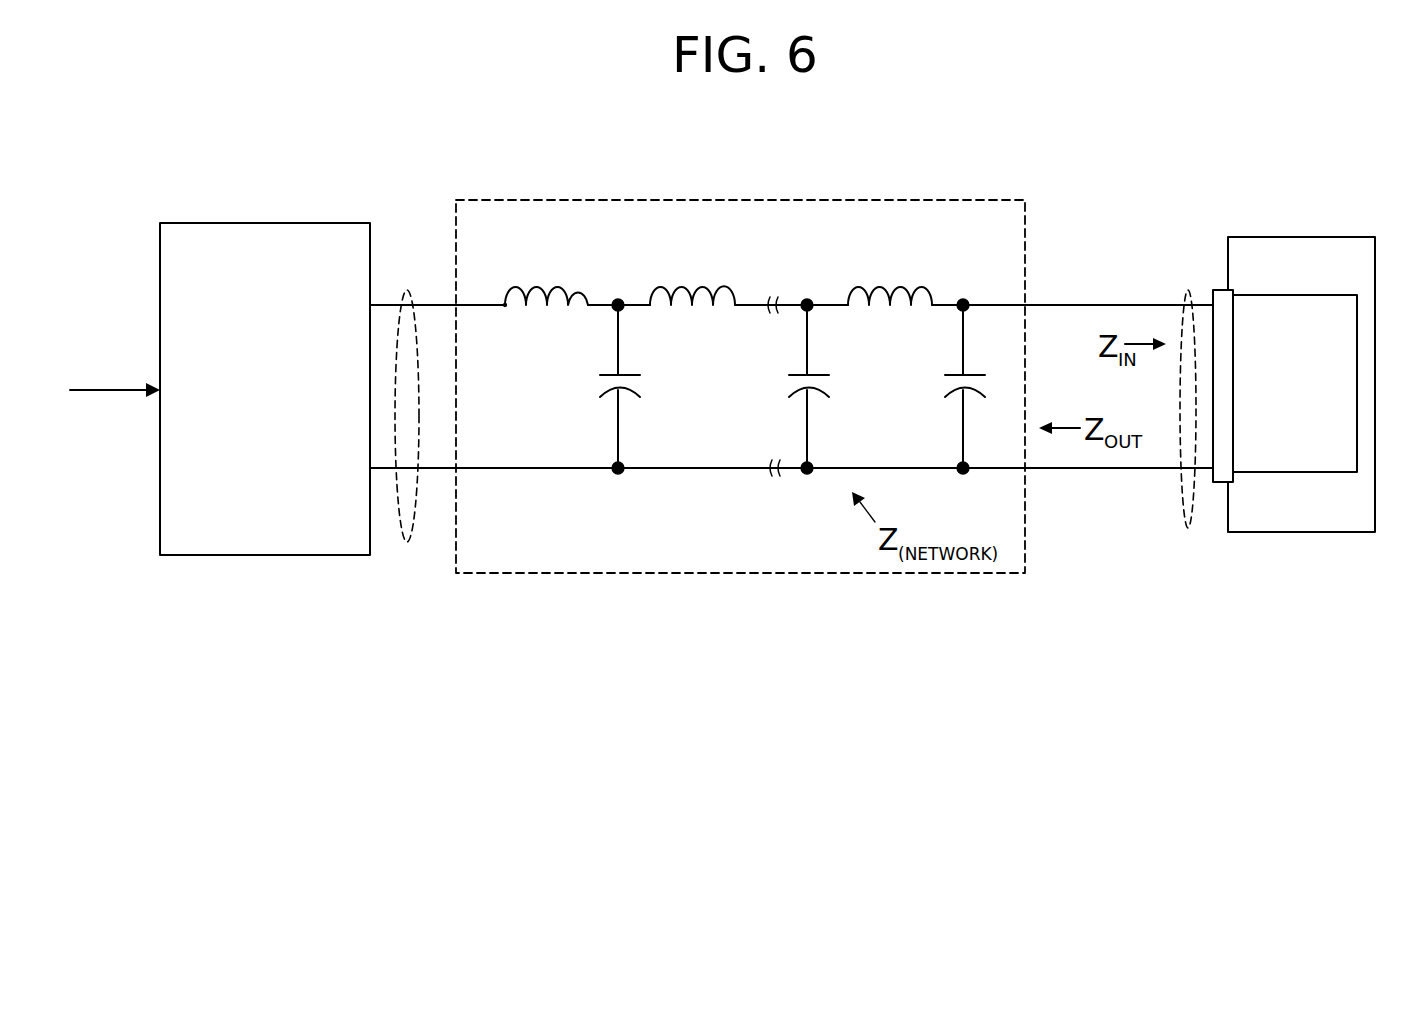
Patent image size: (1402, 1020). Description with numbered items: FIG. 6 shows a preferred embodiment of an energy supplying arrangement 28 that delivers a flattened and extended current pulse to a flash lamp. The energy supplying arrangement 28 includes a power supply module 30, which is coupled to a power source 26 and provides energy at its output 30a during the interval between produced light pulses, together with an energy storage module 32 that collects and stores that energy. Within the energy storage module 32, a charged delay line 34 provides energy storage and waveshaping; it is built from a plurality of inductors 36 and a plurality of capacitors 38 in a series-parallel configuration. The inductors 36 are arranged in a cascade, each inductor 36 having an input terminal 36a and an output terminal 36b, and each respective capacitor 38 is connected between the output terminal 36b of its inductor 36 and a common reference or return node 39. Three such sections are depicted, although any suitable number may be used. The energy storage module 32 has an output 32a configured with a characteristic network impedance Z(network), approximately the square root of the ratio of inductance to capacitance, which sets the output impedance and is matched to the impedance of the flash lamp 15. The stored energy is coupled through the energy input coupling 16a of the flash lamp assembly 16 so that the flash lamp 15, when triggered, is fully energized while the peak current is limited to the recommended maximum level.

The flash lamp 15 is at (1275, 473).
The flash lamp assembly 16 is at (1335, 533).
The energy input coupling 16a is at (1220, 484).
The power source 26 is at (105, 396).
The energy supplying arrangement 28 is at (564, 682).
The power supply module 30 is at (262, 556).
The output 30a is at (410, 430).
The energy storage module 32 is at (968, 199).
The output 32a is at (1183, 428).
The charged delay line 34 is at (596, 513).
The inductor 36 is at (545, 326).
The input terminal 36a is at (494, 292).
The output terminal 36b is at (604, 292).
The capacitor 38 is at (608, 393).
The common reference node 39 is at (715, 470).